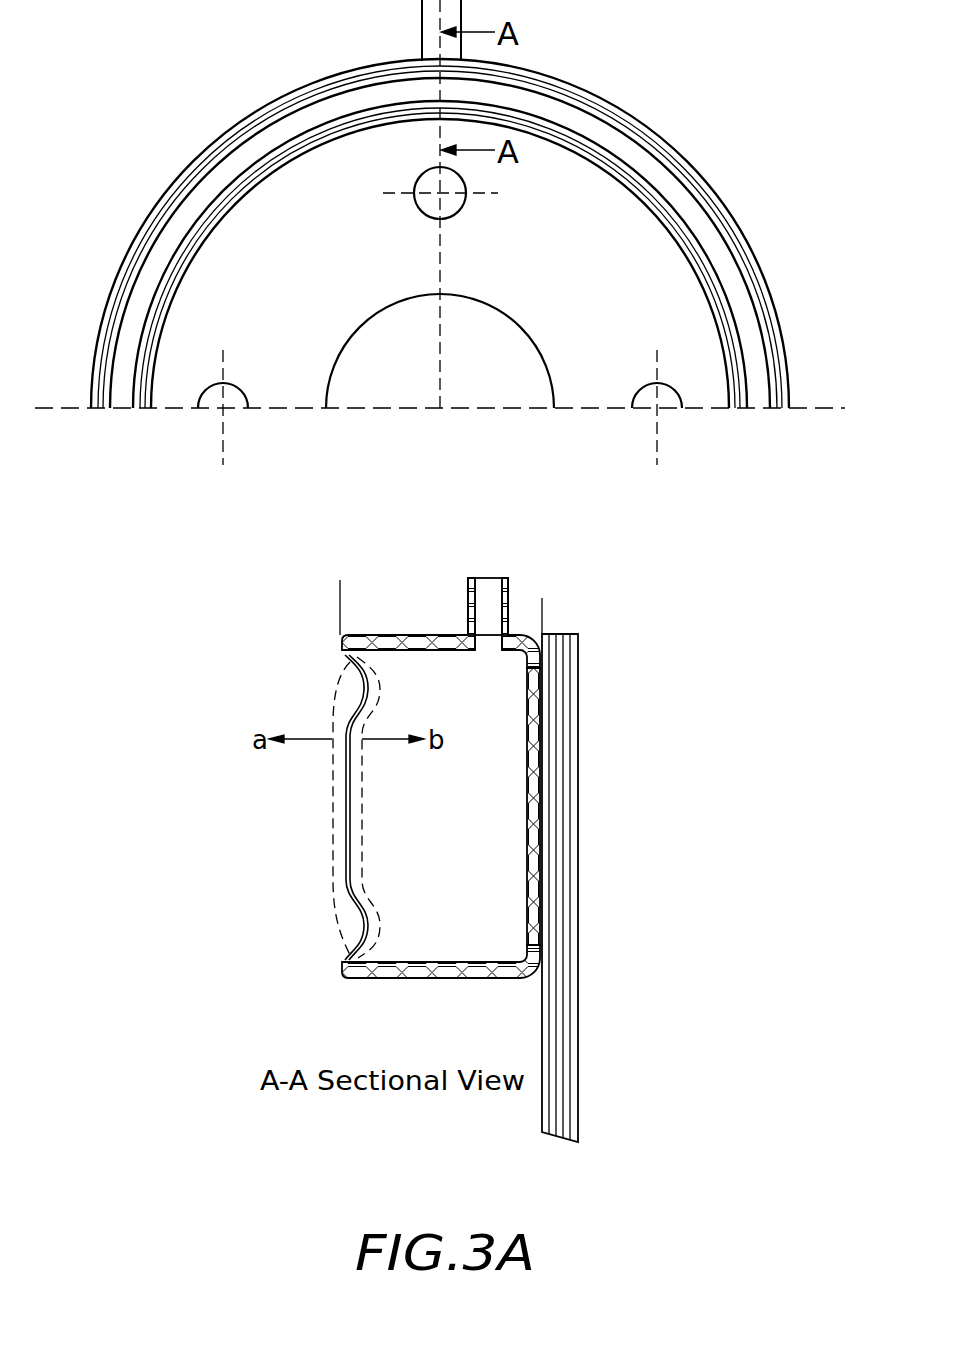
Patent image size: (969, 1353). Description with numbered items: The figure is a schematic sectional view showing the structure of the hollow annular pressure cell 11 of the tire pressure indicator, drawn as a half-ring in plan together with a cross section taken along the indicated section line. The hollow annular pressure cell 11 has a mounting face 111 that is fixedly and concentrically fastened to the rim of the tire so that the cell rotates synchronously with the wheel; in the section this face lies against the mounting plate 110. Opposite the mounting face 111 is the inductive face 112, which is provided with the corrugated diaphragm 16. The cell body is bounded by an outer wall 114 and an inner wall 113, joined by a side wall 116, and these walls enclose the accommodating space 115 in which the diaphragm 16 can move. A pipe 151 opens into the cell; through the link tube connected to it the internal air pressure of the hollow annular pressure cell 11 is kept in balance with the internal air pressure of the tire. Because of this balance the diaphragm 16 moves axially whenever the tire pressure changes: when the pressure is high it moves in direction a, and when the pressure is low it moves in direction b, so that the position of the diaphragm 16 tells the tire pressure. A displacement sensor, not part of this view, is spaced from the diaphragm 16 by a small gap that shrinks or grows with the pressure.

The hollow annular pressure cell 11 is at (600, 125).
The corrugated diaphragm 16 is at (347, 813).
The mounting plate 110 is at (542, 720).
The mounting face 111 is at (542, 607).
The inductive face 112 is at (340, 600).
The inner wall 113 is at (693, 268).
The outer wall 114 is at (725, 208).
The accommodating space 115 is at (375, 855).
The side wall 116 is at (530, 773).
The pipe 151 is at (432, 21).